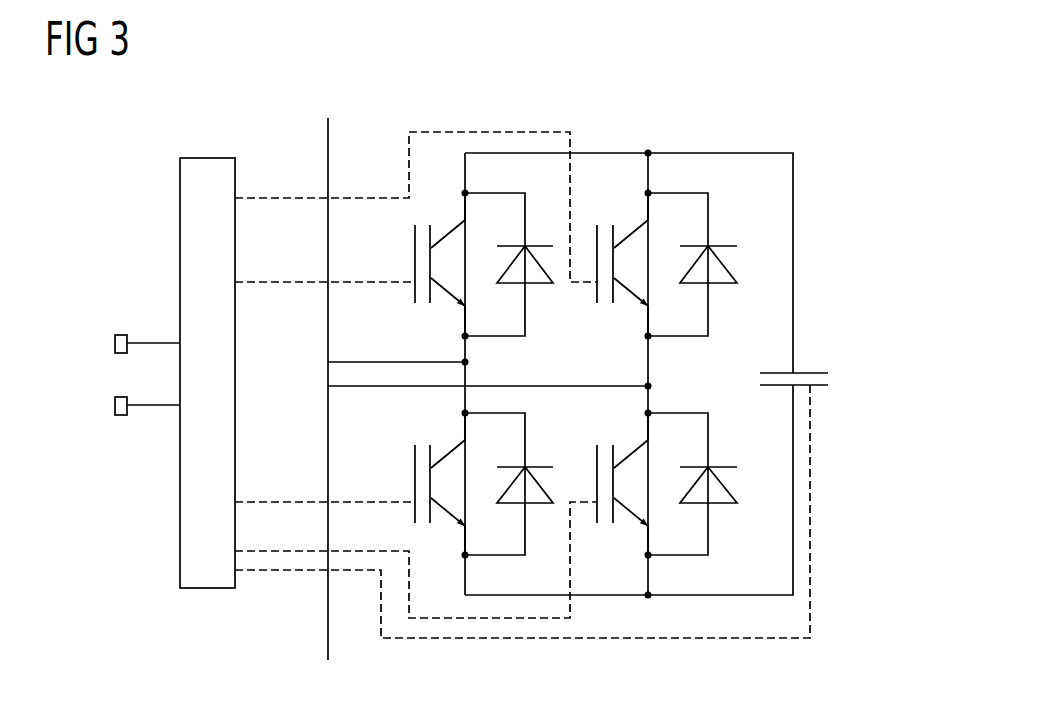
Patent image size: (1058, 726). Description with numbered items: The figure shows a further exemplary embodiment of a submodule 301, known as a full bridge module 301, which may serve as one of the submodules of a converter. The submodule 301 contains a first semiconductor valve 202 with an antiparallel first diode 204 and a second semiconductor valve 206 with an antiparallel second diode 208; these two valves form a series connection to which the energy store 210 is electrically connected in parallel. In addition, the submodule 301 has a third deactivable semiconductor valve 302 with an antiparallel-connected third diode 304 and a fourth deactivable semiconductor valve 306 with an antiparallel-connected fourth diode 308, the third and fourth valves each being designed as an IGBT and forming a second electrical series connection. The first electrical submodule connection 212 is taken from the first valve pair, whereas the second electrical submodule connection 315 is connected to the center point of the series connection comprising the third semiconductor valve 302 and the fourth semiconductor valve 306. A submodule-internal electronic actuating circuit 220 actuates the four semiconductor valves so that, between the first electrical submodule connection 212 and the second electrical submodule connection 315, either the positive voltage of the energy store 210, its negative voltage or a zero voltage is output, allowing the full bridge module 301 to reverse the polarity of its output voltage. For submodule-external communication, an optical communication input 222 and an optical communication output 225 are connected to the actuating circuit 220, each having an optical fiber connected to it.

The submodule 301 is at (849, 128).
The actuating circuit 220 is at (206, 157).
The first electrical submodule connection 212 is at (328, 140).
The second electrical submodule connection 315 is at (328, 648).
The optical communication input 222 is at (113, 343).
The optical communication output 225 is at (113, 405).
The first semiconductor valve 202 is at (414, 255).
The first diode 204 is at (510, 266).
The second semiconductor valve 206 is at (414, 478).
The second diode 208 is at (510, 488).
The third deactivable semiconductor valve 302 is at (617, 265).
The third diode 304 is at (733, 262).
The fourth deactivable semiconductor valve 306 is at (617, 485).
The fourth diode 308 is at (733, 482).
The energy store 210 is at (815, 372).